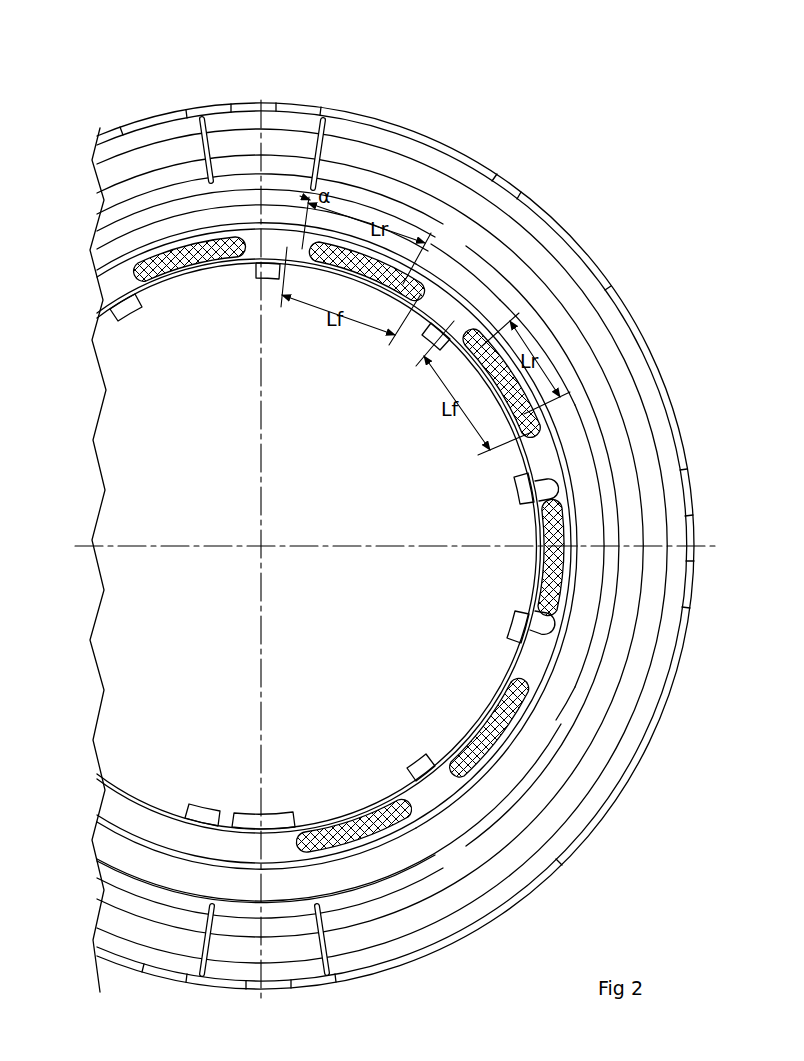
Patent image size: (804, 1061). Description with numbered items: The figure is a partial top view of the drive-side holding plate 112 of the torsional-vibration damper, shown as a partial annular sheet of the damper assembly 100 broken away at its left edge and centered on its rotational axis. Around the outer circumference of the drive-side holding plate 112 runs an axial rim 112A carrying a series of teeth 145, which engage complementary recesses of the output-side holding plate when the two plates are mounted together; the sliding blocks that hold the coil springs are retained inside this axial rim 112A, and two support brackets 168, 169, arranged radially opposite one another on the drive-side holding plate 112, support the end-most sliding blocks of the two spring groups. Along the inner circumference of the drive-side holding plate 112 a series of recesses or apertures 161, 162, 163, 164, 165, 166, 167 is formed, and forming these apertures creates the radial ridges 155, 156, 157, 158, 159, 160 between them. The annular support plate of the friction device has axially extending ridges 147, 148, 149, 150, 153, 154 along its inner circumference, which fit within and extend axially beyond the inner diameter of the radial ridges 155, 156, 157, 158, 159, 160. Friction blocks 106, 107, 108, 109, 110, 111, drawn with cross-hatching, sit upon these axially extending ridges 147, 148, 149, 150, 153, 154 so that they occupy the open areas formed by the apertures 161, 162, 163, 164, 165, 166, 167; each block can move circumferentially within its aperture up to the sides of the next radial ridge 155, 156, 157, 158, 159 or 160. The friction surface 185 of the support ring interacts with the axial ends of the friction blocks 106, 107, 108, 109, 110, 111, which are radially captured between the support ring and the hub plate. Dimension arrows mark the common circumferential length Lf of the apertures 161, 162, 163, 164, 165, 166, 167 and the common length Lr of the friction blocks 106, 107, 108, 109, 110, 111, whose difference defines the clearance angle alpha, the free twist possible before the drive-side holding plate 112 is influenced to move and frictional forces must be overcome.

The turbine ring assembly 100 is at (600, 140).
The friction block 106 is at (160, 300).
The friction block 107 is at (432, 300).
The friction block 108 is at (563, 410).
The friction block 109 is at (600, 528).
The friction block 110 is at (525, 790).
The friction block 111 is at (378, 800).
The drive-side holding plate 112 is at (620, 320).
The axial rim 112A is at (618, 287).
The teeth 145 is at (525, 195).
The axially extending ridge 147 is at (560, 232).
The axially extending ridge 148 is at (548, 565).
The axially extending ridge 149 is at (395, 865).
The axially extending ridge 150 is at (150, 800).
The axially extending ridge 153 is at (180, 292).
The axially extending ridge 154 is at (470, 325).
The radial ridge 155 is at (250, 250).
The radial ridge 156 is at (472, 325).
The radial ridge 157 is at (555, 455).
The radial ridge 158 is at (560, 640).
The radial ridge 159 is at (420, 795).
The radial ridge 160 is at (248, 845).
The aperture 161 is at (130, 262).
The aperture 162 is at (358, 238).
The aperture 163 is at (545, 300).
The aperture 164 is at (570, 500).
The aperture 165 is at (530, 672).
The aperture 166 is at (325, 870).
The aperture 167 is at (215, 855).
The support bracket 168 is at (320, 122).
The support bracket 169 is at (315, 910).
The friction surface 185 is at (545, 650).